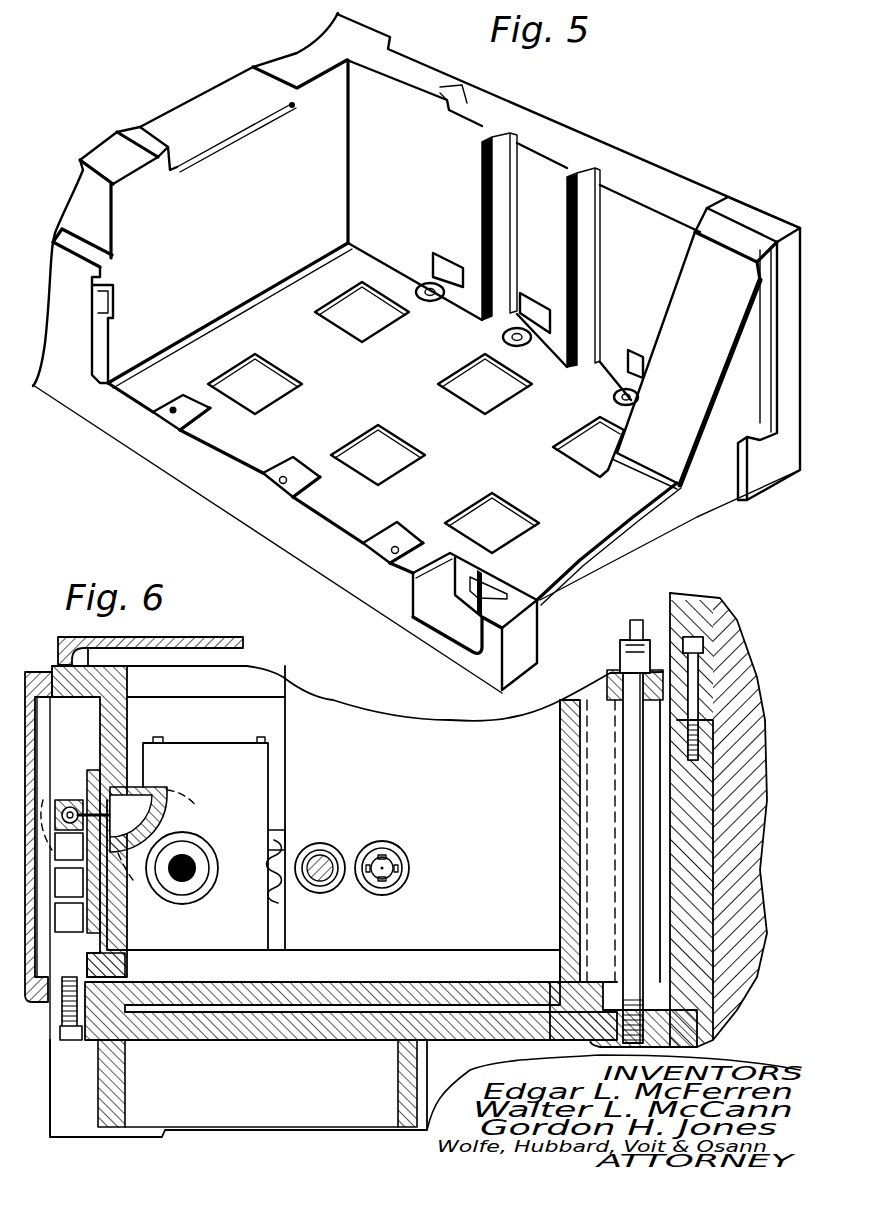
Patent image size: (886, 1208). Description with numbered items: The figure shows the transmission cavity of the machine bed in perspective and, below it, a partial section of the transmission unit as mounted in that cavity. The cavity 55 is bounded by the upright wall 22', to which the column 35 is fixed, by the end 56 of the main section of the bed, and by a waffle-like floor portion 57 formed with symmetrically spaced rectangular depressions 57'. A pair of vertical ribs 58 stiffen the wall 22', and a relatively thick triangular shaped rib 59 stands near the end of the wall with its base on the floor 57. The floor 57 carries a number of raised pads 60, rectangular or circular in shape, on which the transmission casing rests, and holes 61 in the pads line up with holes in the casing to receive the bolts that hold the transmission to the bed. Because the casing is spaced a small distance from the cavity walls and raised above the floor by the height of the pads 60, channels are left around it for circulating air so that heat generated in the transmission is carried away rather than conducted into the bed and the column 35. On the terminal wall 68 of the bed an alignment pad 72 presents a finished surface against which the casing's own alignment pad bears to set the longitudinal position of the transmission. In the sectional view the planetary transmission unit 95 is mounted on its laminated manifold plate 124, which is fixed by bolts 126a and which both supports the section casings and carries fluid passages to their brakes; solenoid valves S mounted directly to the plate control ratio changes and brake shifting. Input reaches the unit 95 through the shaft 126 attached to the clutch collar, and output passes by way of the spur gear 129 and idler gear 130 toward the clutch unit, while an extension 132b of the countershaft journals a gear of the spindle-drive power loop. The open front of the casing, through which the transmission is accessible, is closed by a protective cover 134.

In FIG. 5, the upright wall 22' is at (568, 128).
In FIG. 6, the upright wall 22' is at (735, 820).
In FIG. 5, the cavity 55 is at (108, 383).
In FIG. 5, the end of the main section of the bed 56 is at (320, 88).
In FIG. 5, the floor portion 57 is at (394, 424).
In FIG. 5, the rectangular depressions 57' is at (416, 414).
In FIG. 5, the vertical ribs 58 is at (490, 232).
In FIG. 5, the triangular shaped rib 59 is at (680, 321).
In FIG. 5, the pads 60 is at (423, 288).
In FIG. 5, the holes 61 is at (430, 277).
In FIG. 5, the terminal wall 68 is at (697, 512).
In FIG. 5, the alignment pad 72 is at (770, 470).
In FIG. 6, the protective cover 134 is at (27, 670).
In FIG. 6, the planetary transmission unit 95 is at (211, 745).
In FIG. 6, the manifold plate 124 is at (86, 779).
In FIG. 6, the solenoid valves S is at (58, 806).
In FIG. 6, the shaft 126 is at (182, 850).
In FIG. 6, the bolts 126a is at (126, 968).
In FIG. 6, the idler gear 130 is at (267, 838).
In FIG. 6, the spur gear 129 is at (280, 897).
In FIG. 6, the extension of the countershaft 132b is at (323, 850).
In FIG. 6, the column 35 is at (747, 647).